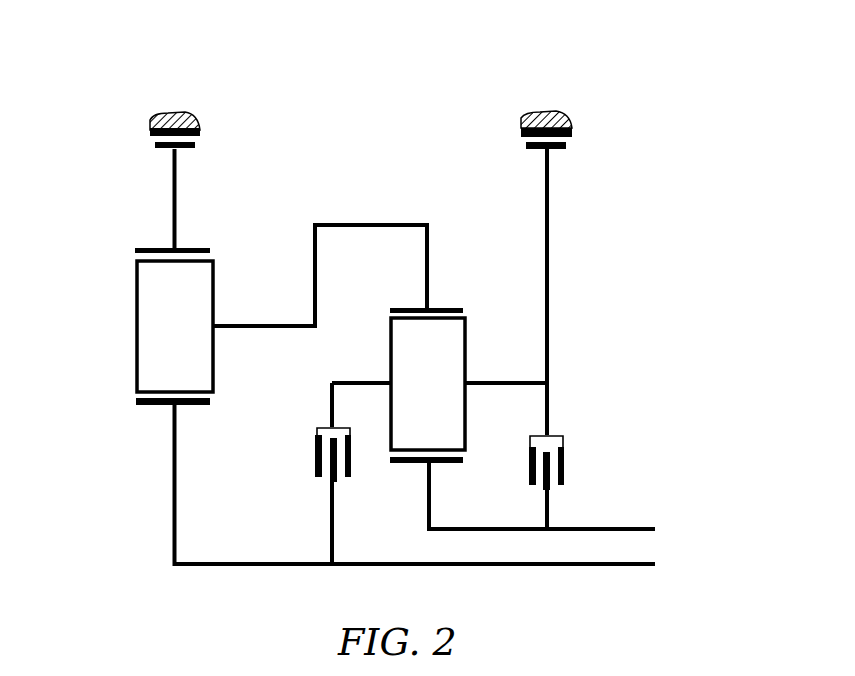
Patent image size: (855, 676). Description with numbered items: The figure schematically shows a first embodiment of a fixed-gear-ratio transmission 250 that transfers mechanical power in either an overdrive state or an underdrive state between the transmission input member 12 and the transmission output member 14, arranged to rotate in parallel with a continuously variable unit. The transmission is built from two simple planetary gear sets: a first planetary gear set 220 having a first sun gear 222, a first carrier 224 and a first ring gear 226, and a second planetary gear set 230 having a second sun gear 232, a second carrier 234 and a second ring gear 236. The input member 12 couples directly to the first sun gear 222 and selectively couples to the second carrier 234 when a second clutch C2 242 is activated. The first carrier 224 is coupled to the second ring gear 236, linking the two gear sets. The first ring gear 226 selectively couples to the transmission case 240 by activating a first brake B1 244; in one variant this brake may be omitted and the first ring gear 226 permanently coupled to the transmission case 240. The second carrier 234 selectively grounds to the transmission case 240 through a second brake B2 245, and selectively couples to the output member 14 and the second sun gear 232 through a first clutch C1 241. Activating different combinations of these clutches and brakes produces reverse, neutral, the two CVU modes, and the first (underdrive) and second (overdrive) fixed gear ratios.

The transmission input member 12 is at (690, 576).
The transmission output member 14 is at (690, 541).
The first planetary gear set 220 is at (185, 329).
The first sun gear 222 is at (190, 406).
The first carrier 224 is at (194, 337).
The first ring gear 226 is at (143, 247).
The second planetary gear set 230 is at (432, 381).
The second sun gear 232 is at (442, 463).
The second carrier 234 is at (447, 399).
The second ring gear 236 is at (410, 307).
The transmission case 240 is at (170, 112).
The first clutch C1 241 is at (565, 467).
The second clutch C2 242 is at (316, 448).
The first brake B1 244 is at (190, 138).
The second brake B2 245 is at (562, 140).
The fixed-gear-ratio transmission 250 is at (628, 125).